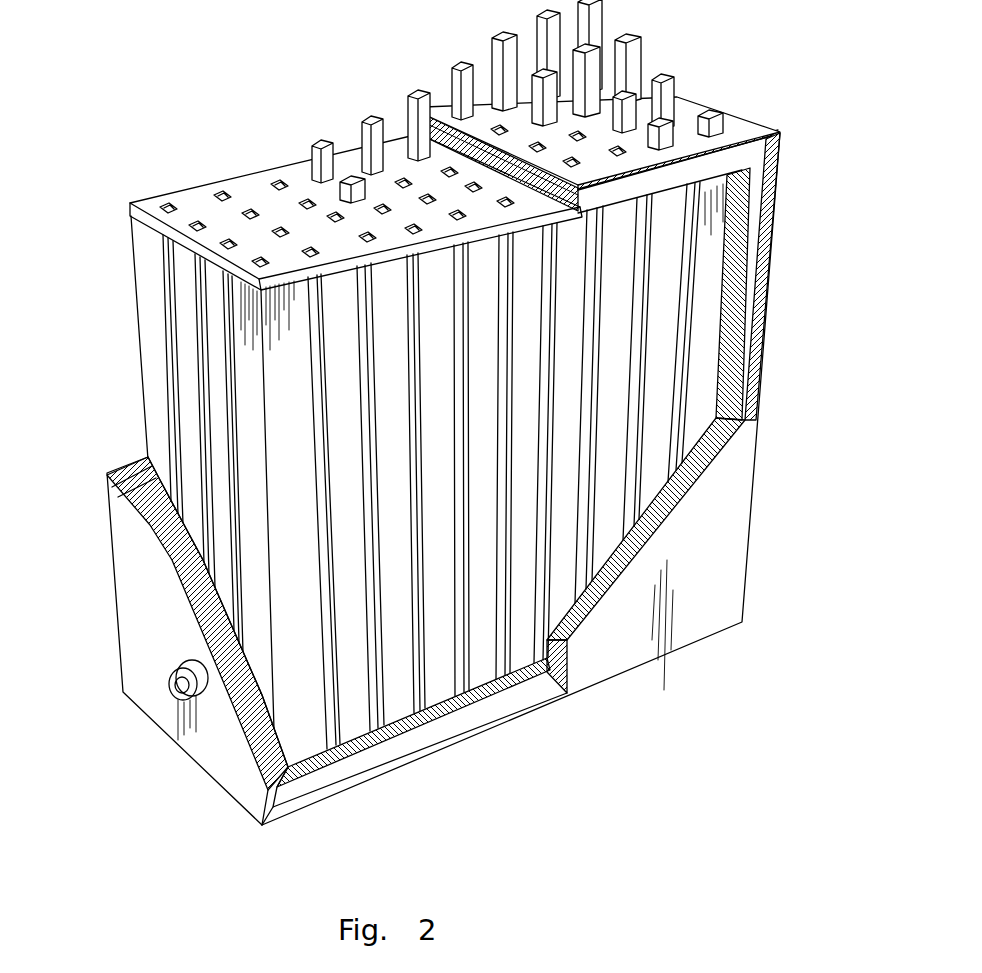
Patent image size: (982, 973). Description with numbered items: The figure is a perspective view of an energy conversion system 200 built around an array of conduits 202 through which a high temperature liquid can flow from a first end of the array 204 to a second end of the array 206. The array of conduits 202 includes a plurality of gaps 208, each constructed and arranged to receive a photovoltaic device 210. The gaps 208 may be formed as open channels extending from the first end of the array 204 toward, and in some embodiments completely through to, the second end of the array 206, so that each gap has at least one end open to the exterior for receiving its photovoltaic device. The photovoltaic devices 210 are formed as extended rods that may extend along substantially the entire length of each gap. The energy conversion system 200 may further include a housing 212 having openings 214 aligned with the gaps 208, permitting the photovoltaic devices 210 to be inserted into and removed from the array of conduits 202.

The energy conversion system 200 is at (189, 56).
The array of conduits 202 is at (184, 305).
The first end of the array 204 is at (297, 204).
The second end of the array 206 is at (237, 761).
The gaps 208 is at (246, 210).
The photovoltaic device 210 is at (427, 95).
The housing 212 is at (752, 496).
The openings 214 is at (622, 150).